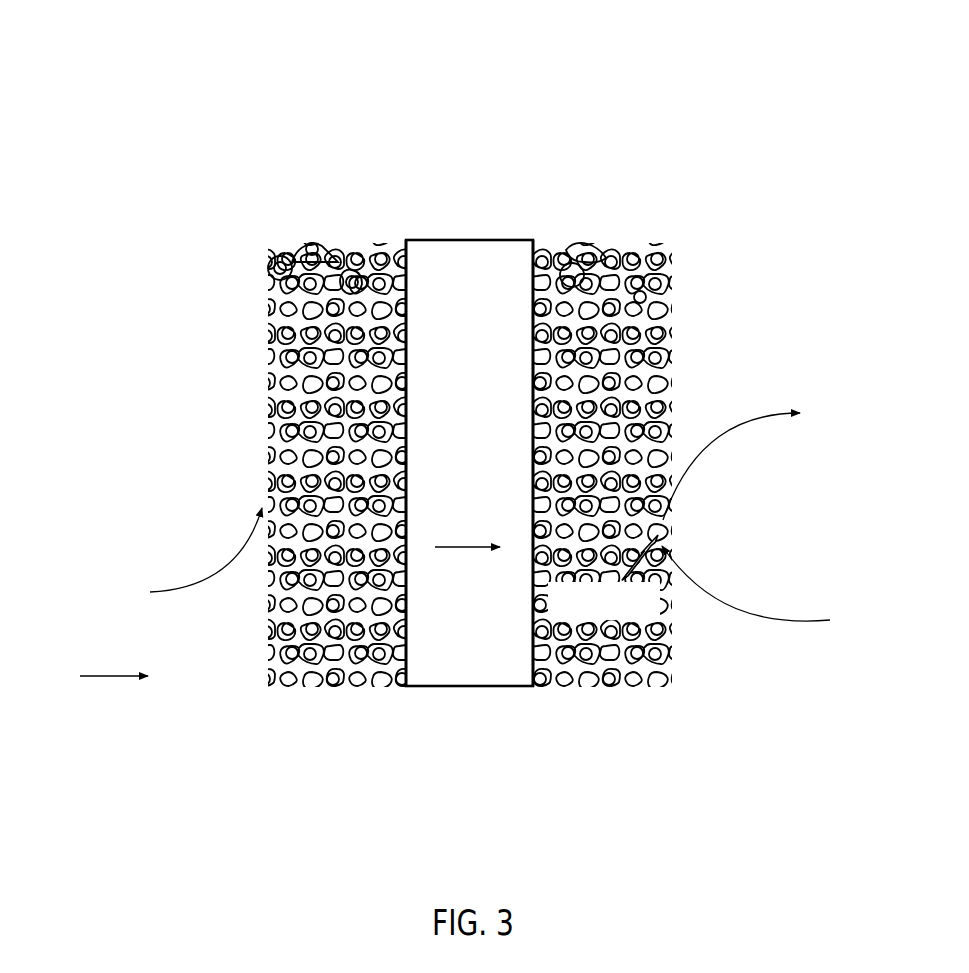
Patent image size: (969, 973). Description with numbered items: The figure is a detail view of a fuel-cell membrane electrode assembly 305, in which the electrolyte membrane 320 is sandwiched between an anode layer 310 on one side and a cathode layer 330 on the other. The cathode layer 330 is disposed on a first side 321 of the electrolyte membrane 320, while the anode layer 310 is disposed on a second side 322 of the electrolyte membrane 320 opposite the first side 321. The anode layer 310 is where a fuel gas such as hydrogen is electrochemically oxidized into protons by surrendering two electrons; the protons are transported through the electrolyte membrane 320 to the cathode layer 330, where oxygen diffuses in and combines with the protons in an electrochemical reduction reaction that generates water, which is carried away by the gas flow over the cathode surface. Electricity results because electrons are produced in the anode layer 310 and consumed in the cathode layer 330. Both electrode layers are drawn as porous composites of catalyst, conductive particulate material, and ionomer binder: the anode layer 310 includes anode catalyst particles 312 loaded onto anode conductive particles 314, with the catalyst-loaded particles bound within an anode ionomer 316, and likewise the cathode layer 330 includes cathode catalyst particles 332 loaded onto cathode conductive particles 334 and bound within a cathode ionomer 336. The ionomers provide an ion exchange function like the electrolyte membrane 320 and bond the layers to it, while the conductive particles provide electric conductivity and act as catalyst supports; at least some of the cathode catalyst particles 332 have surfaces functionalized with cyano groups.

The membrane electrode assembly 305 is at (710, 110).
The anode layer 310 is at (403, 693).
The anode catalyst particles 312 is at (312, 245).
The anode conductive particles 314 is at (278, 268).
The anode ionomer 316 is at (352, 282).
The electrolyte membrane 320 is at (531, 693).
The first side 321 is at (544, 240).
The second side 322 is at (399, 238).
The cathode layer 330 is at (672, 693).
The cathode catalyst particles 332 is at (646, 296).
The cathode conductive particles 334 is at (584, 248).
The cathode ionomer 336 is at (571, 271).